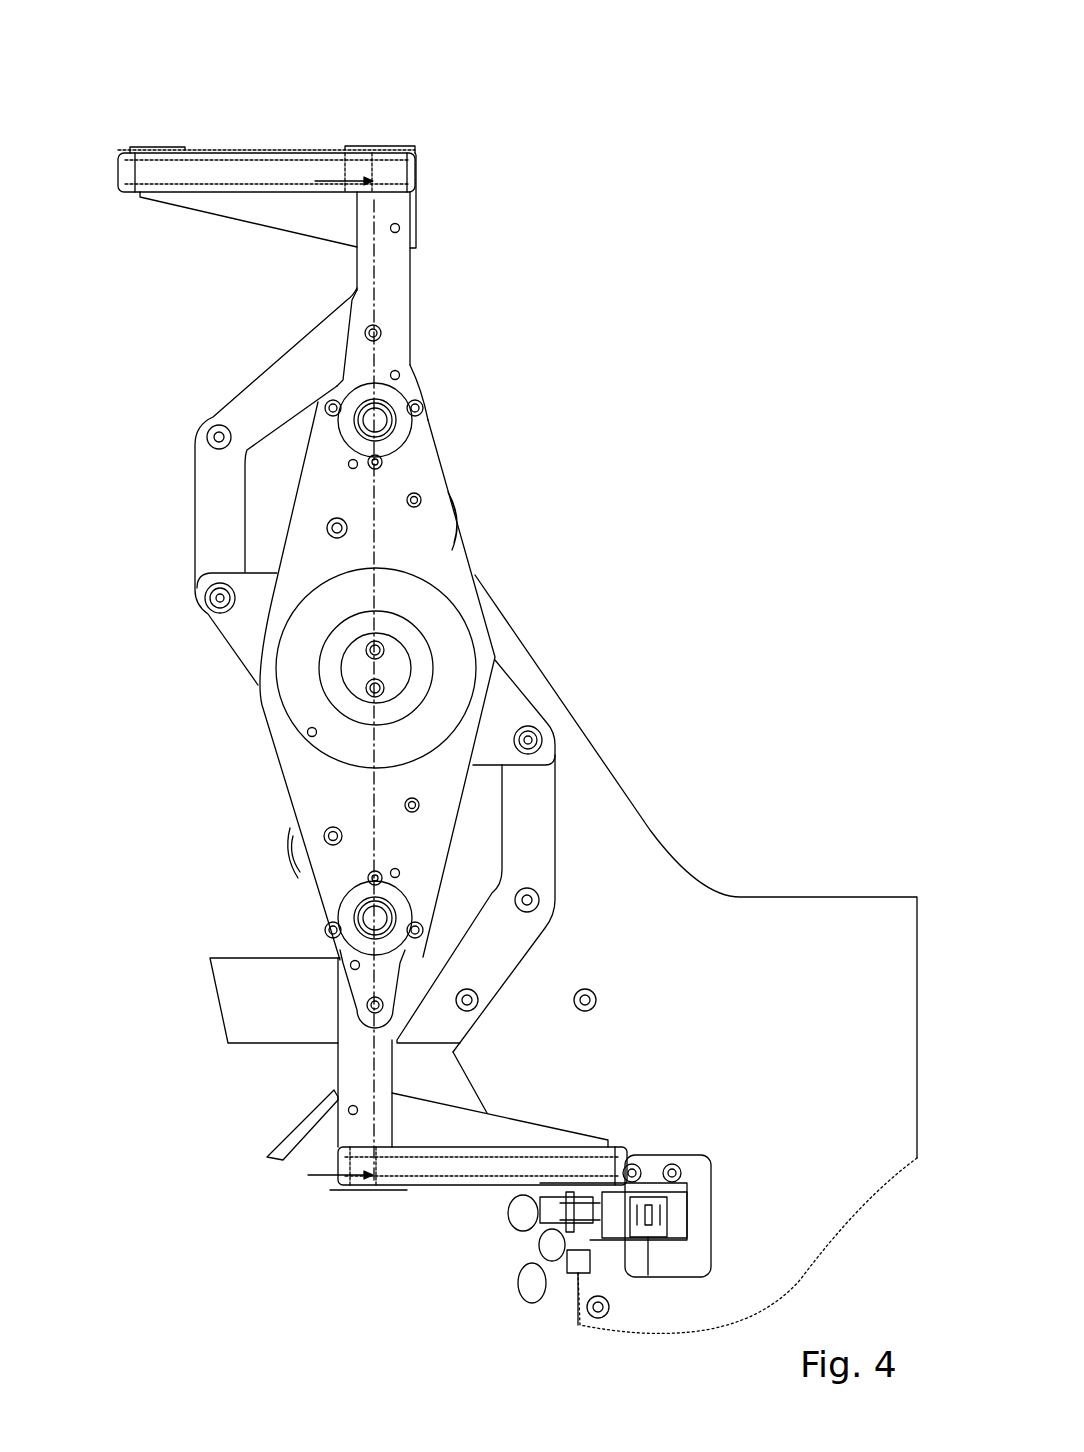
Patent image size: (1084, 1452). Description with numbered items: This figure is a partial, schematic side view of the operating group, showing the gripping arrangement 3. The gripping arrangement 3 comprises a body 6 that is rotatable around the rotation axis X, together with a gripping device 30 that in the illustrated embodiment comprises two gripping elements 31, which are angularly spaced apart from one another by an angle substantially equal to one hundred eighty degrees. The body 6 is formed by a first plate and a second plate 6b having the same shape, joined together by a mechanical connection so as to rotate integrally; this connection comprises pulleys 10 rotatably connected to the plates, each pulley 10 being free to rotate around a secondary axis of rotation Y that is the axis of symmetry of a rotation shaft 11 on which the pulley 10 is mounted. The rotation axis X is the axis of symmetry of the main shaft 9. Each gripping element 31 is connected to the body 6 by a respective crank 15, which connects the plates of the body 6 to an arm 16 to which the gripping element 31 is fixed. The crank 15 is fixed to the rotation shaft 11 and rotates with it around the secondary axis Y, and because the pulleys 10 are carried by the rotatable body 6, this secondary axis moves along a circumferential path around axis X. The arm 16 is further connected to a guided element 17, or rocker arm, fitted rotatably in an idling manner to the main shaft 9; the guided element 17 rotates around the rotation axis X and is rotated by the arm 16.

The gripping arrangement 3 is at (528, 720).
The gripping device 30 is at (493, 200).
The gripping element 31 is at (272, 121).
The body 6 is at (469, 681).
The second plate 6b is at (440, 570).
The main shaft 9 is at (360, 670).
The pulley 10 is at (298, 438).
The rotation shaft 11 is at (397, 420).
The crank 15 is at (385, 350).
The arm 16 is at (290, 375).
The guided element 17 is at (242, 618).